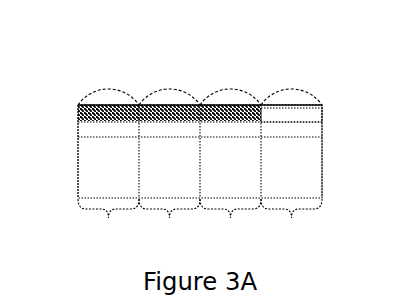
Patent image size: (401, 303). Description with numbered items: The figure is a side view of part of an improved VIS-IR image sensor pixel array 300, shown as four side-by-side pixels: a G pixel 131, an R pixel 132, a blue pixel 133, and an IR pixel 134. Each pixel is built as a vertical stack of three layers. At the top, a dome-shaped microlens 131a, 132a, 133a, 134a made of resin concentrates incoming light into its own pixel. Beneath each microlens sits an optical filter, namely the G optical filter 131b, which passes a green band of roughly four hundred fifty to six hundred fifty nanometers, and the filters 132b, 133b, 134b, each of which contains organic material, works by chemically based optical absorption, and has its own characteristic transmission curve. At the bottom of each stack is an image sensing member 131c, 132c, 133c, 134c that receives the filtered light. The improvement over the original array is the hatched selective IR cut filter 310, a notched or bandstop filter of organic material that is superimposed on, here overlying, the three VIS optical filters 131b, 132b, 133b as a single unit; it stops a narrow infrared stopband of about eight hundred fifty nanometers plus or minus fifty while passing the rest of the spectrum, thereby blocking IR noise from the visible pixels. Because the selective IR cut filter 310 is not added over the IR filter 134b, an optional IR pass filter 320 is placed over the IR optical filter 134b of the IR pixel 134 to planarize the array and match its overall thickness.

The improved VIS-IR image sensor pixel array 300 is at (330, 97).
The selective IR cut filter 310 is at (78, 112).
The IR pass filter 320 is at (322, 107).
The G pixel 131 is at (108, 166).
The R pixel 132 is at (169, 166).
The blue pixel 133 is at (230, 166).
The IR pixel 134 is at (291, 166).
The microlens 131a is at (113, 127).
The G optical filter 131b is at (99, 107).
The image sensing member 131c is at (108, 167).
The microlens 132a is at (163, 127).
The optical filter 132b is at (140, 107).
The image sensing member 132c is at (169, 167).
The microlens 133a is at (230, 128).
The optical filter 133b is at (206, 107).
The image sensing member 133c is at (230, 167).
The microlens 134a is at (288, 127).
The IR optical filter 134b is at (262, 108).
The image sensing member 134c is at (291, 167).